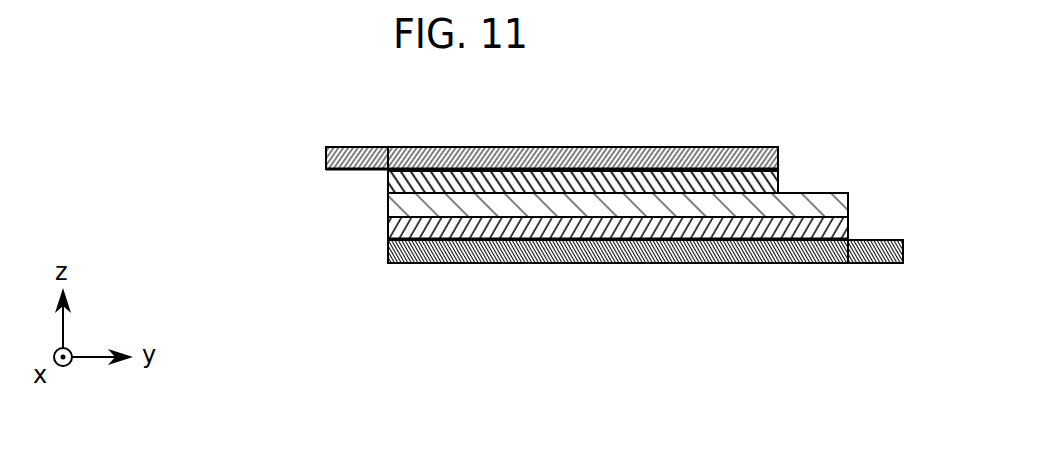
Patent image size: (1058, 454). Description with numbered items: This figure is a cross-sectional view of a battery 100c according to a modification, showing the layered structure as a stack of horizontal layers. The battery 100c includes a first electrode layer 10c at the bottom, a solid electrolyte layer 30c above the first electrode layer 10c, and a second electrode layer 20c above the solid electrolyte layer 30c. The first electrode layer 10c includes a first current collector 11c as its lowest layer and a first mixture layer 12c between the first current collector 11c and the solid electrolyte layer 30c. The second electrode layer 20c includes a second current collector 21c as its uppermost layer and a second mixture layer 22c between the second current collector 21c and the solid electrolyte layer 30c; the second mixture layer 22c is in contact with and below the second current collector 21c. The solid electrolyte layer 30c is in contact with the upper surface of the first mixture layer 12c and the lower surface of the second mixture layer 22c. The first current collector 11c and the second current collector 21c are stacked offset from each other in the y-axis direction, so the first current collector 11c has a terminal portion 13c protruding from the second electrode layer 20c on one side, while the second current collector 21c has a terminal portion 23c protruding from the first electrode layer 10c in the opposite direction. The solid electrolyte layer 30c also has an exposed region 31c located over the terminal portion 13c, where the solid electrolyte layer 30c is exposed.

The battery 100c is at (165, 128).
The second electrode layer 20c is at (235, 118).
The second current collector 21c is at (327, 160).
The second mixture layer 22c is at (393, 182).
The terminal portion 23c is at (388, 140).
The solid electrolyte layer 30c is at (393, 205).
The exposed region 31c is at (808, 193).
The first electrode layer 10c is at (235, 212).
The first mixture layer 12c is at (393, 233).
The first current collector 11c is at (393, 255).
The terminal portion 13c is at (903, 267).